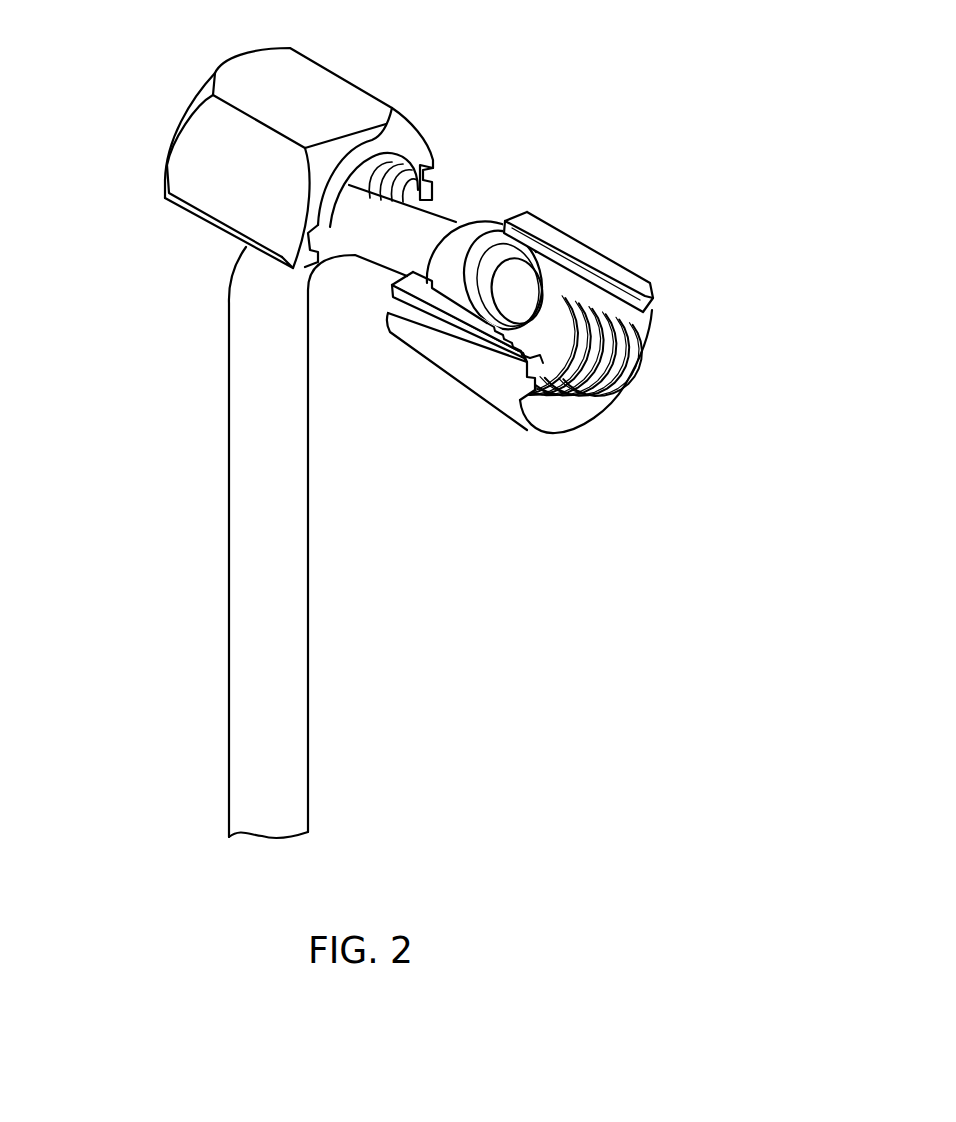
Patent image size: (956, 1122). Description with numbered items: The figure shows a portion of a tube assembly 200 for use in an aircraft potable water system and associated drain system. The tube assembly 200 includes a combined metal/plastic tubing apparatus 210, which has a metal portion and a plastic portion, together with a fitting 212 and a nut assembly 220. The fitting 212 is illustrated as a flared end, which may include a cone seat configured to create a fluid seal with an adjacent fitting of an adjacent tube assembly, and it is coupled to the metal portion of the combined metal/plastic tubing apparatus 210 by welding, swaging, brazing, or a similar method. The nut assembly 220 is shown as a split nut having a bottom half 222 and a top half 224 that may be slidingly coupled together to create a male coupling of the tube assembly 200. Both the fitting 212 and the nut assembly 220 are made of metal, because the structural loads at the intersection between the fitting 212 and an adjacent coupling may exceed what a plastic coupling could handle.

The tube assembly 200 is at (582, 108).
The combined metal/plastic tubing apparatus 210 is at (285, 612).
The fitting 212 is at (500, 233).
The nut assembly 220 is at (662, 255).
The bottom half 222 is at (210, 143).
The top half 224 is at (588, 362).